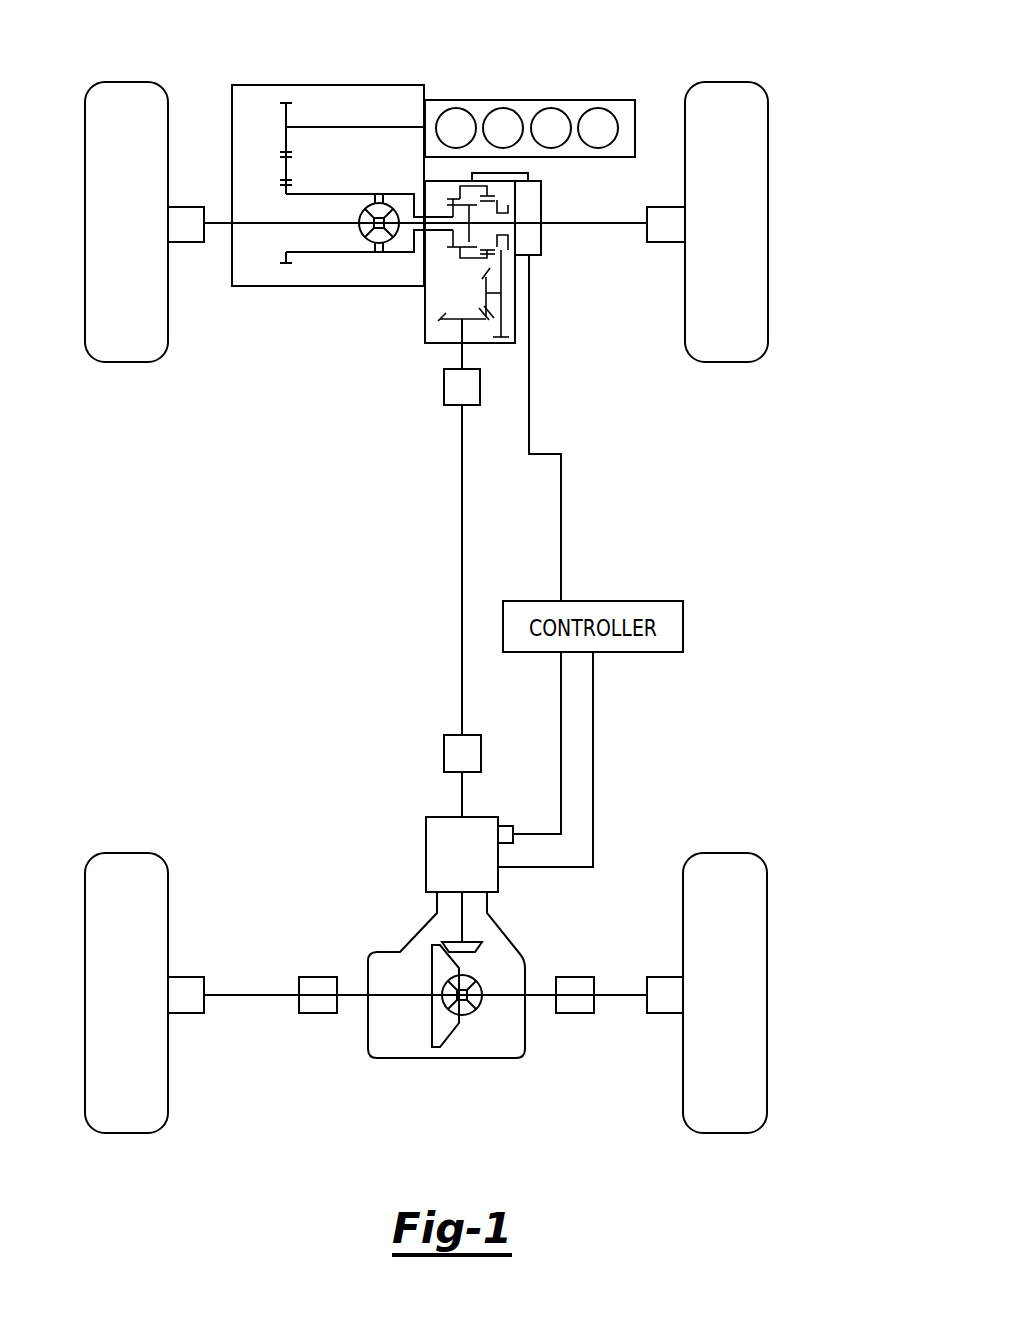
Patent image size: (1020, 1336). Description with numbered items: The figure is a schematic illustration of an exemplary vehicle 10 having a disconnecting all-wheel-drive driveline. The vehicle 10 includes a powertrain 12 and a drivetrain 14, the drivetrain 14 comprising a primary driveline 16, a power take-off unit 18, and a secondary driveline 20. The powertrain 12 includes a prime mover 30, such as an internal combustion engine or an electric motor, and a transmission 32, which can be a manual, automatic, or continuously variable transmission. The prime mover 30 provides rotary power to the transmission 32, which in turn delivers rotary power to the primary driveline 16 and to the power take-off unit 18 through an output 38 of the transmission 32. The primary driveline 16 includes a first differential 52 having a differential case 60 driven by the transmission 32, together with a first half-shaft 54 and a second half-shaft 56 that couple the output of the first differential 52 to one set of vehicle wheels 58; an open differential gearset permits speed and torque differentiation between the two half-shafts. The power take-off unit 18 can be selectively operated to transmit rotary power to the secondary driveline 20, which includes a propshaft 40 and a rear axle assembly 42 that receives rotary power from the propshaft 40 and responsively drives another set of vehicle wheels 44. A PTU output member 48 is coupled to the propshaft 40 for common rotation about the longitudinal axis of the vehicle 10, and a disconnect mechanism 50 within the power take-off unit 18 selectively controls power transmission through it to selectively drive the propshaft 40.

The vehicle 10 is at (774, 584).
The powertrain 12 is at (526, 68).
The drivetrain 14 is at (401, 577).
The primary driveline 16 is at (268, 292).
The power take-off unit 18 is at (366, 333).
The secondary driveline 20 is at (358, 1079).
The prime mover 30 is at (462, 100).
The transmission 32 is at (290, 85).
The output 38 is at (315, 195).
The propshaft 40 is at (462, 683).
The rear axle assembly 42 is at (481, 1066).
The vehicle wheels 44 is at (124, 853).
The PTU output member 48 is at (460, 359).
The disconnect mechanism 50 is at (438, 204).
The first differential 52 is at (368, 252).
The first half-shaft 54 is at (628, 228).
The second half-shaft 56 is at (218, 222).
The vehicle wheels 58 is at (126, 362).
The differential case 60 is at (358, 215).